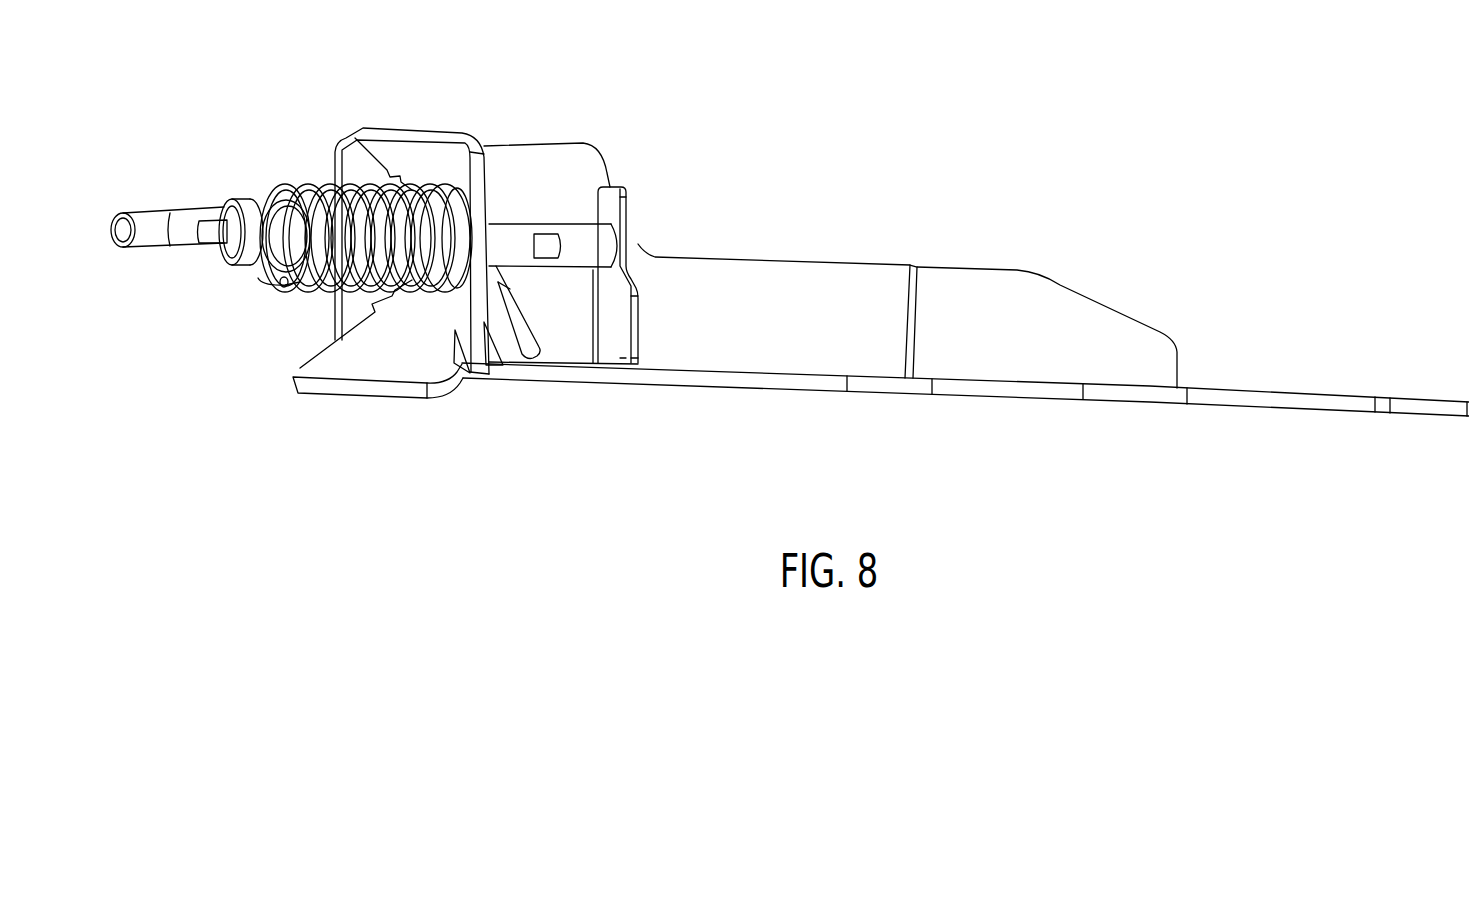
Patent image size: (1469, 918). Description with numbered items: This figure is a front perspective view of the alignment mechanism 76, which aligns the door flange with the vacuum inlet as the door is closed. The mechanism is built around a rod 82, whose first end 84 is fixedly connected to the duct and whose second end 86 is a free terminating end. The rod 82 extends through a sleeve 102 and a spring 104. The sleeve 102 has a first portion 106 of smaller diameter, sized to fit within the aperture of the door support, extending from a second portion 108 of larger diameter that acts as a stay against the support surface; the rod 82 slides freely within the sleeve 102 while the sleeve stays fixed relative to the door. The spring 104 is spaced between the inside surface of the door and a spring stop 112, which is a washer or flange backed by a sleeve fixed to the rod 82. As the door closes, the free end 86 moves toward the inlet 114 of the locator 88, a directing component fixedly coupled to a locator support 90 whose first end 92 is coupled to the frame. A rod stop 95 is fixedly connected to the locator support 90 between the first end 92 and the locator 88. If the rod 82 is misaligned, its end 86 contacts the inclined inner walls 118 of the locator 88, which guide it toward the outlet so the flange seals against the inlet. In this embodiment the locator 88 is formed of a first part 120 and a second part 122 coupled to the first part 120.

The alignment mechanism 76 is at (555, 72).
The rod 82 is at (527, 220).
The first end 84 is at (127, 222).
The second end 86 is at (606, 240).
The locator 88 is at (468, 430).
The locator support 90 is at (872, 235).
The first end 92 is at (1313, 348).
The rod stop 95 is at (618, 215).
The sleeve 102 is at (240, 177).
The spring 104 is at (311, 177).
The first portion 106 is at (262, 258).
The second portion 108 is at (297, 270).
The spring stop 112 is at (440, 205).
The inlet 114 is at (373, 365).
The inner walls 118 is at (401, 338).
The first part 120 is at (393, 137).
The second part 122 is at (323, 388).